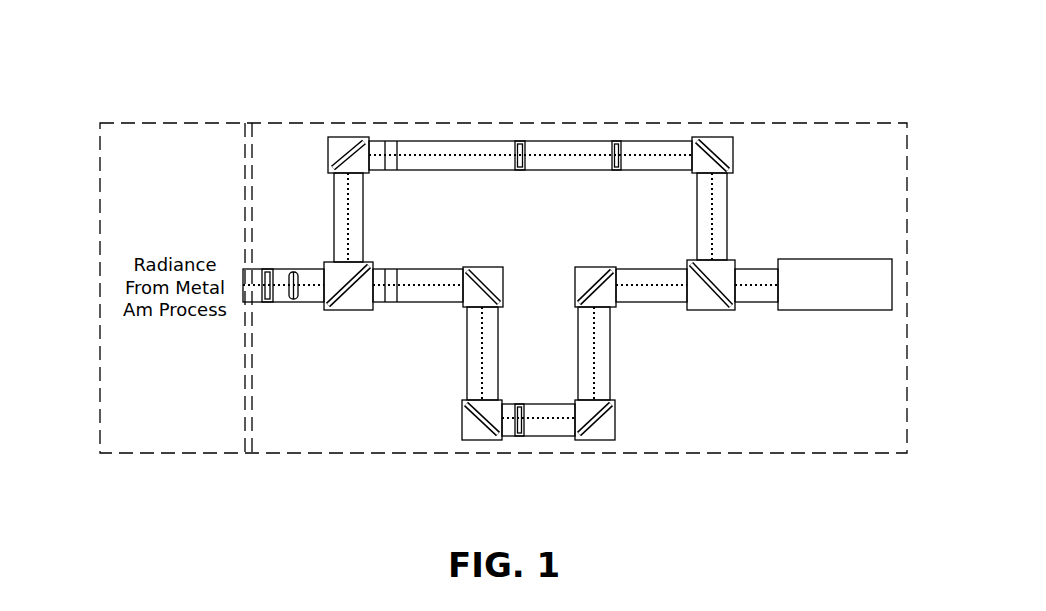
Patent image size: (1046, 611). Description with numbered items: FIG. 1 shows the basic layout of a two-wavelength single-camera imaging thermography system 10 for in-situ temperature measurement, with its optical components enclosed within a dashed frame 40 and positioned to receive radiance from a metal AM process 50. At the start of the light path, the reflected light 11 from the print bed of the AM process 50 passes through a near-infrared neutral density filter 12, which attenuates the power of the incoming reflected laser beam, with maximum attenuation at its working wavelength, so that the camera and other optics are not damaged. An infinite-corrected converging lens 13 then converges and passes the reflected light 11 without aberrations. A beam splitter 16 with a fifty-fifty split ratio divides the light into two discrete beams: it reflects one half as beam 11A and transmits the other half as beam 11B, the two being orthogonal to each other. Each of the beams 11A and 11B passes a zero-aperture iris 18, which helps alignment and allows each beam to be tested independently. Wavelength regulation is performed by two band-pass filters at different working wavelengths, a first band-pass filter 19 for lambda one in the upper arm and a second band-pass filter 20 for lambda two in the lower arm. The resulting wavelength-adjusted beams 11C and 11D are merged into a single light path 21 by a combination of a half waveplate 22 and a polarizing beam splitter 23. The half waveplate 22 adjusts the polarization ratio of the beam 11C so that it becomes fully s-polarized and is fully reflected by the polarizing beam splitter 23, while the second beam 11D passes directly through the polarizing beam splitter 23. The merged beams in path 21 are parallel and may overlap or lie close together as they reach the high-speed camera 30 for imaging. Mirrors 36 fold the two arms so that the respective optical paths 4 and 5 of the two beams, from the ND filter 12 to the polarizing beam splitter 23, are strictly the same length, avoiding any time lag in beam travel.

The two-wavelength single-camera imaging thermography (TSIT) in-situ temperature mea 10 is at (160, 98).
The metal AM process 50 is at (100, 400).
The dashed frame 40 is at (908, 365).
The reflected light 11 is at (262, 266).
The near-infrared neutral density filter 12 is at (269, 305).
The infinite-corrected lens 13 is at (293, 266).
The reflected beam 11A is at (348, 205).
The beam splitter 16 is at (352, 310).
The transmitted beam 11B is at (428, 303).
The zero-aperture iris 18 is at (391, 140).
The first optical path 4 is at (497, 138).
The band-pass filter (lambda 1) 19 is at (520, 172).
The first wavelength-adjusted beam 11C is at (586, 152).
The half waveplate 22 is at (625, 145).
The mirrors 36 is at (350, 161).
The polarizing beam splitter 23 is at (773, 175).
The single light path 21 is at (767, 303).
The high-speed camera 30 is at (892, 283).
The second optical path 5 is at (510, 442).
The second wavelength-adjusted beam 11D is at (563, 420).
The band-pass filter (lambda 2) 20 is at (515, 440).